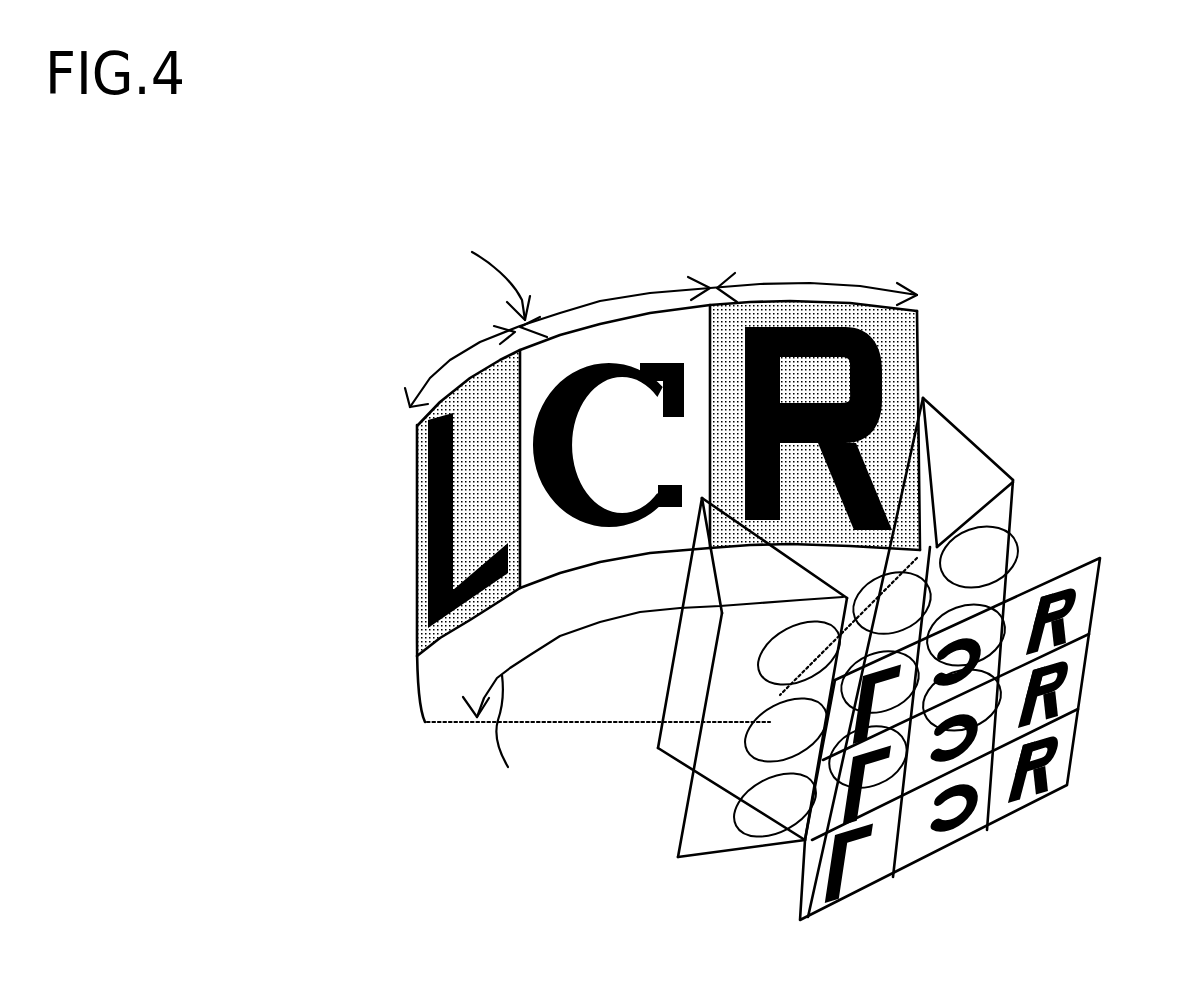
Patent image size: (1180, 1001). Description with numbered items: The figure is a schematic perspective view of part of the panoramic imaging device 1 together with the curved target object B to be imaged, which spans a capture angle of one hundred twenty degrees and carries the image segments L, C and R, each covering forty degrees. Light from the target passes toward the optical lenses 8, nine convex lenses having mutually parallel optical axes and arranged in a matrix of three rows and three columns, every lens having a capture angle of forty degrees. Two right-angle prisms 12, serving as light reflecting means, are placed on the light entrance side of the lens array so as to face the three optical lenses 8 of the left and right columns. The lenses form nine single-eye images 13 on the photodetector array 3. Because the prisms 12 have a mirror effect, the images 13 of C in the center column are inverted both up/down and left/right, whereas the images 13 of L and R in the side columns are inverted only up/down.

The panoramic imaging device 1 is at (1122, 453).
The photodetector array 3 is at (1085, 556).
The optical lenses 8 is at (765, 732).
The right-angle prisms 12 is at (697, 583).
The single-eye images 13 is at (1068, 753).